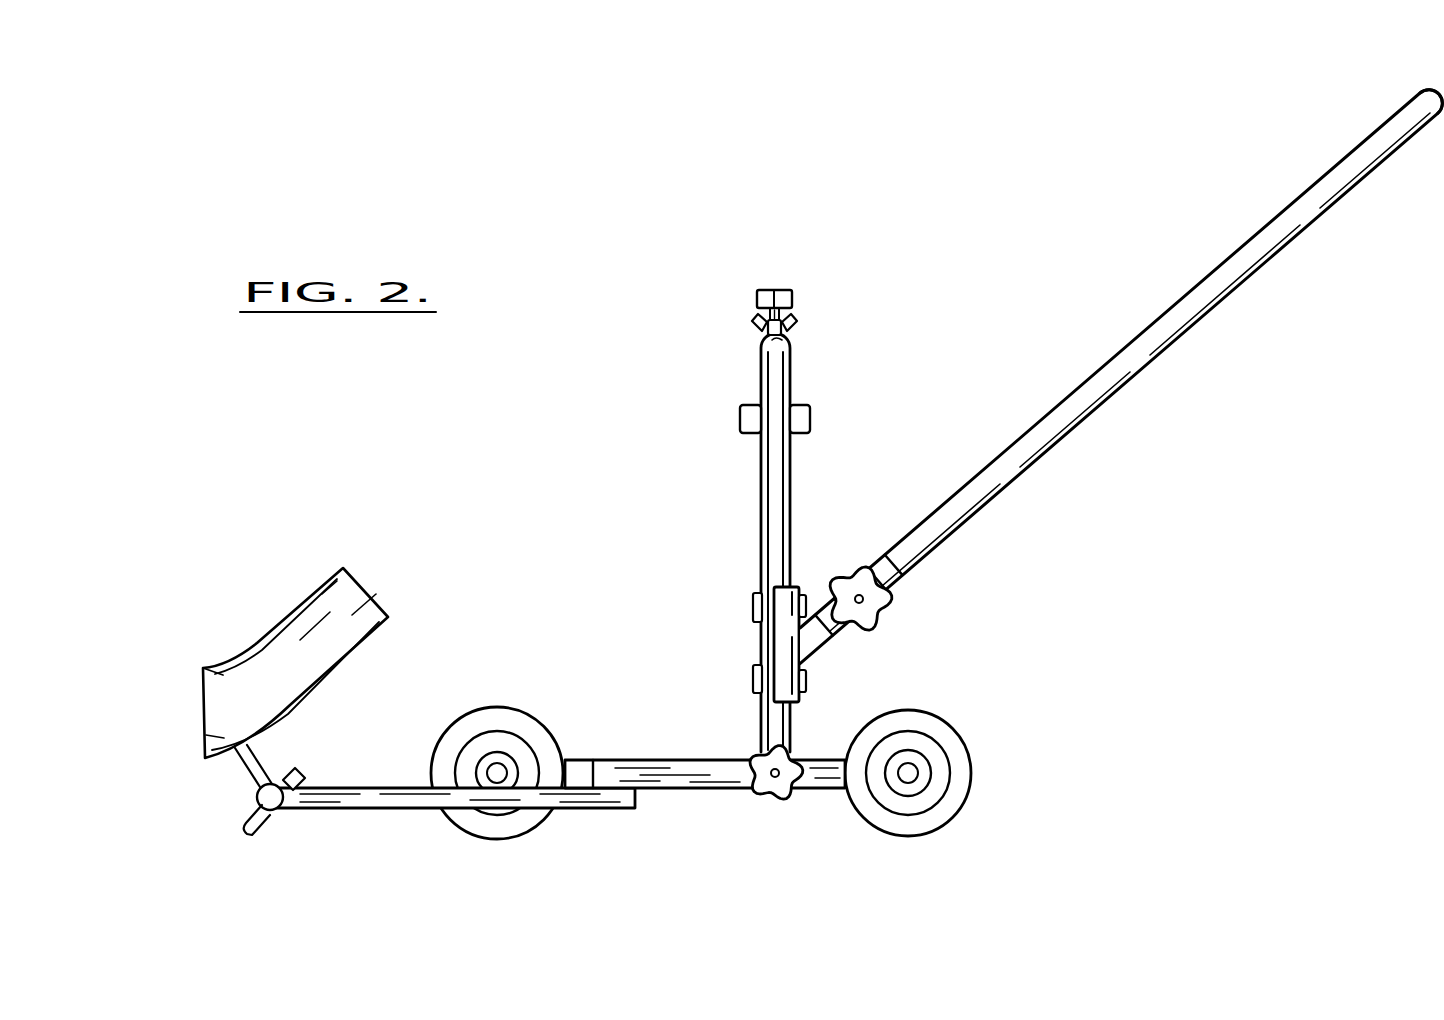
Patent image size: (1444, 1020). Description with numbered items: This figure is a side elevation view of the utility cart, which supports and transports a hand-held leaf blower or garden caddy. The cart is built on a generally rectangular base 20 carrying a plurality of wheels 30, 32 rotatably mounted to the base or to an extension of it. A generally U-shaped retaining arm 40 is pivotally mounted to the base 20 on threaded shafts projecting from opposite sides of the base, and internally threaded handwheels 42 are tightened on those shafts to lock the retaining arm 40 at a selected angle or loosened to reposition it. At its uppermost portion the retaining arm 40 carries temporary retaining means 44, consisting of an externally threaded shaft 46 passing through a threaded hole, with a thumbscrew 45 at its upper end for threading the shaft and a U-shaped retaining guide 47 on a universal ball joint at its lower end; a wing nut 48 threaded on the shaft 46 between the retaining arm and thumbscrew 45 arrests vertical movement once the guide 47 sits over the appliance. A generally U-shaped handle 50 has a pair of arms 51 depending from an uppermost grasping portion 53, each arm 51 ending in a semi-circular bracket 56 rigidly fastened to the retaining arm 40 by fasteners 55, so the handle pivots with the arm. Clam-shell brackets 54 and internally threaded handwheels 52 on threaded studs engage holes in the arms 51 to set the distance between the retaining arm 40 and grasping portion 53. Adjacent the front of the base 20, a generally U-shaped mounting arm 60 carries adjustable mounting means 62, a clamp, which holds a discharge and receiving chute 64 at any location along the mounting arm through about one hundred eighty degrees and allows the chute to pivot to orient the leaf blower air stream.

The base 20 is at (682, 780).
The wheel 30 is at (971, 775).
The wheel 32 is at (508, 720).
The retaining arm 40 is at (760, 505).
The handwheels 42 is at (781, 790).
The temporary retaining means 44 is at (816, 266).
The thumbscrew 45 is at (757, 290).
The externally threaded shaft 46 is at (778, 317).
The U-shaped retaining guide 47 is at (742, 407).
The wing nut 48 is at (757, 325).
The handle 50 is at (1157, 278).
The arms 51 is at (1143, 368).
The handwheels 52 is at (888, 612).
The grasping portion 53 is at (1422, 92).
The clam-shell brackets 54 is at (873, 563).
The fasteners 55 is at (752, 597).
The semi-circular bracket 56 is at (783, 650).
The mounting arm 60 is at (380, 810).
The adjustable mounting means 62 is at (303, 772).
The discharge and receiving chute 64 is at (318, 588).